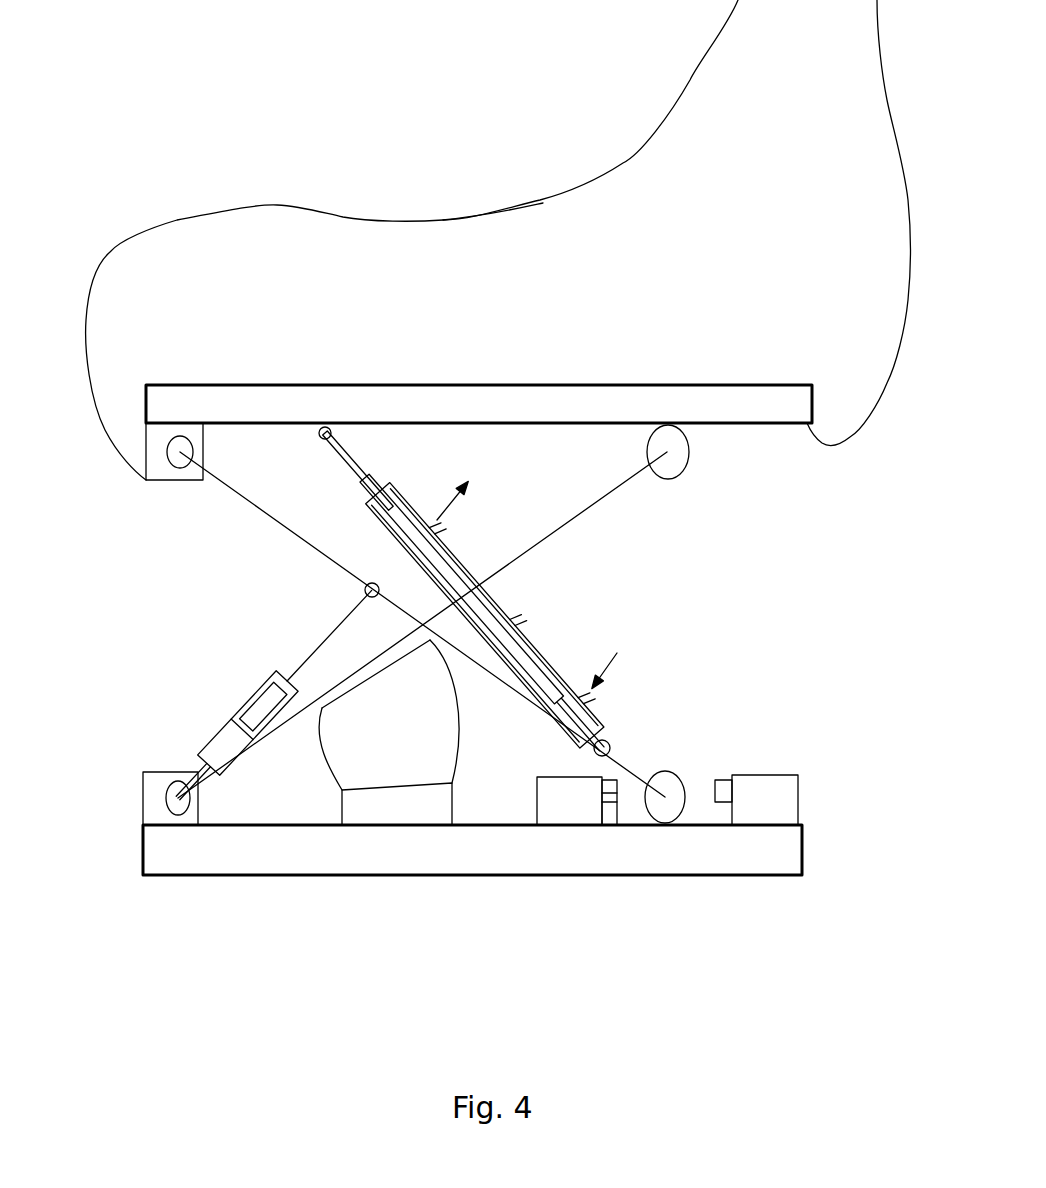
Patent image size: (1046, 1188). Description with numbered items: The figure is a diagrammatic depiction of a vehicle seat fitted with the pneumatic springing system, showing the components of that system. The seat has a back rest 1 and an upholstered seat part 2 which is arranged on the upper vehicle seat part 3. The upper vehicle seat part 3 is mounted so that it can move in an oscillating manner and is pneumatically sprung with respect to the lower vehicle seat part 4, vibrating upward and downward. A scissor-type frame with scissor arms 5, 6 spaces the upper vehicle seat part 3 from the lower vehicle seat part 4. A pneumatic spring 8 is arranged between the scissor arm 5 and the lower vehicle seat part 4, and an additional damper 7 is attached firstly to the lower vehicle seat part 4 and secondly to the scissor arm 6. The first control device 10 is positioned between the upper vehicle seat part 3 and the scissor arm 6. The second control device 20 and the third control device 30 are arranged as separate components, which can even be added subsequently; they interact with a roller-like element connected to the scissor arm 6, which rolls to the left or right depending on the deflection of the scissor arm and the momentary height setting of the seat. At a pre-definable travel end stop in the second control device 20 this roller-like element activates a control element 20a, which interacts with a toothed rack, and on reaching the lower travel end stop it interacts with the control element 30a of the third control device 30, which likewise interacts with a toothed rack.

The back rest 1 is at (892, 248).
The upholstered seat part 2 is at (553, 222).
The upper vehicle seat part 3 is at (711, 422).
The lower vehicle seat part 4 is at (683, 847).
The scissor arm 5 is at (585, 513).
The scissor arm 6 is at (487, 673).
The damper 7 is at (268, 692).
The pneumatic spring 8 is at (360, 767).
The first control device 10 is at (545, 652).
The second control device 20 is at (573, 813).
The control element 20a is at (615, 807).
The third control device 30 is at (783, 810).
The control element 30a is at (723, 790).